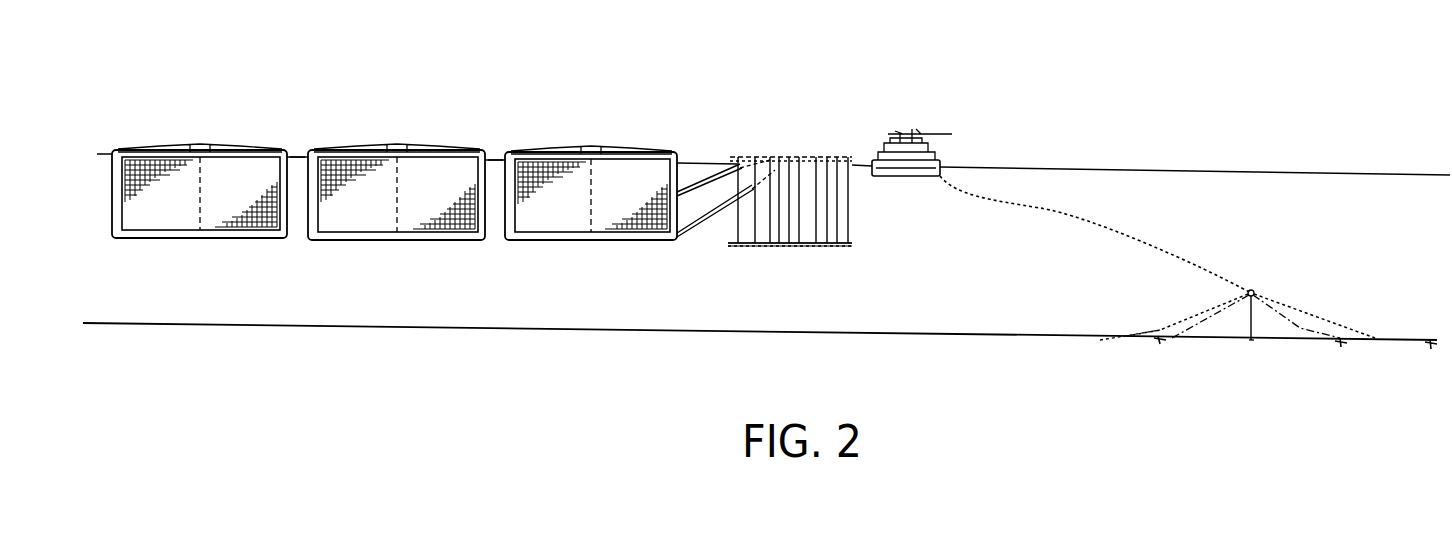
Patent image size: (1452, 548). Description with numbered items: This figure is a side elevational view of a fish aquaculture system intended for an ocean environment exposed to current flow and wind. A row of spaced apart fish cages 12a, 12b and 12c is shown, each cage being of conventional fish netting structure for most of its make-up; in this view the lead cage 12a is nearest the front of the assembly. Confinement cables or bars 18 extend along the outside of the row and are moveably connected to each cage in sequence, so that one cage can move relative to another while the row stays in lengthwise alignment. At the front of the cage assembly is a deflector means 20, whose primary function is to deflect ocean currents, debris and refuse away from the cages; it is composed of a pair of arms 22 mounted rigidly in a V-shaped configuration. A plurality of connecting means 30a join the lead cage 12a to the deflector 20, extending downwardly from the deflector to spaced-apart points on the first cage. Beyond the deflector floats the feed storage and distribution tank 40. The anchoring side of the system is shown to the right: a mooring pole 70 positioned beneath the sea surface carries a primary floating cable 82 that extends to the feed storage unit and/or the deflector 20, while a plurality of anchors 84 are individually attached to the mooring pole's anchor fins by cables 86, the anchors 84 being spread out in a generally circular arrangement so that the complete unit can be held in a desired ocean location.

The fish cage 12a is at (603, 135).
The fish cage 12b is at (408, 136).
The fish cage 12c is at (204, 138).
The confinement cables or bars 18 is at (497, 148).
The deflector means 20 is at (798, 150).
The arms 22 is at (850, 246).
The connecting means 30a is at (703, 176).
The feed storage and distribution tank 40 is at (931, 126).
The mooring pole 70 is at (1239, 282).
The primary floating cable 82 is at (1094, 214).
The anchors 84 is at (1159, 344).
The cables 86 is at (1156, 322).